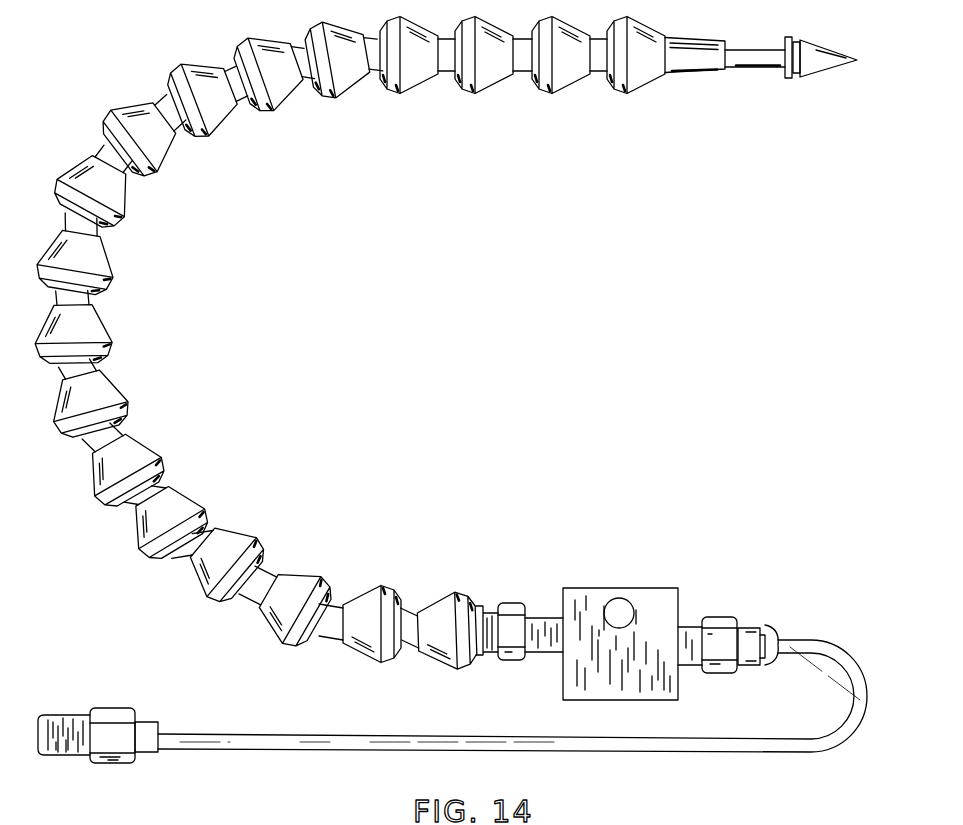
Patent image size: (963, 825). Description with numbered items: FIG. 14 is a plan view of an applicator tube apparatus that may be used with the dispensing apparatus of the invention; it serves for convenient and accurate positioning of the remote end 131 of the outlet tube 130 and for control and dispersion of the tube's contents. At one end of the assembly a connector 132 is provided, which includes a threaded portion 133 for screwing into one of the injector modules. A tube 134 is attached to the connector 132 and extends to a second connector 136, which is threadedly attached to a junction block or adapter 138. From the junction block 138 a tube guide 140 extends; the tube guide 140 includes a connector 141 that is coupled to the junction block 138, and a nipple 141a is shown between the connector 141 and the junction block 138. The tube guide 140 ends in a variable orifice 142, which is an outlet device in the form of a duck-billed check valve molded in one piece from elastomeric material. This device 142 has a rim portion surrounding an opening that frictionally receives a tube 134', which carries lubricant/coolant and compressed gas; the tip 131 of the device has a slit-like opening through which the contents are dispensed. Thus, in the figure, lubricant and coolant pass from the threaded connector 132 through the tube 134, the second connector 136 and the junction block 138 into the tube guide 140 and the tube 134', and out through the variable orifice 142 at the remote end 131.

The outlet tube 130 is at (226, 336).
The remote end 131 is at (858, 61).
The connector 132 is at (95, 762).
The threaded portion 133 is at (47, 755).
The tube 134 is at (512, 708).
The tube 134' is at (755, 91).
The second connector 136 is at (737, 617).
The junction block 138 is at (653, 588).
The tube guide 140 is at (254, 538).
The connector 141 is at (512, 606).
The nipple 141a is at (543, 620).
The variable orifice 142 is at (800, 75).